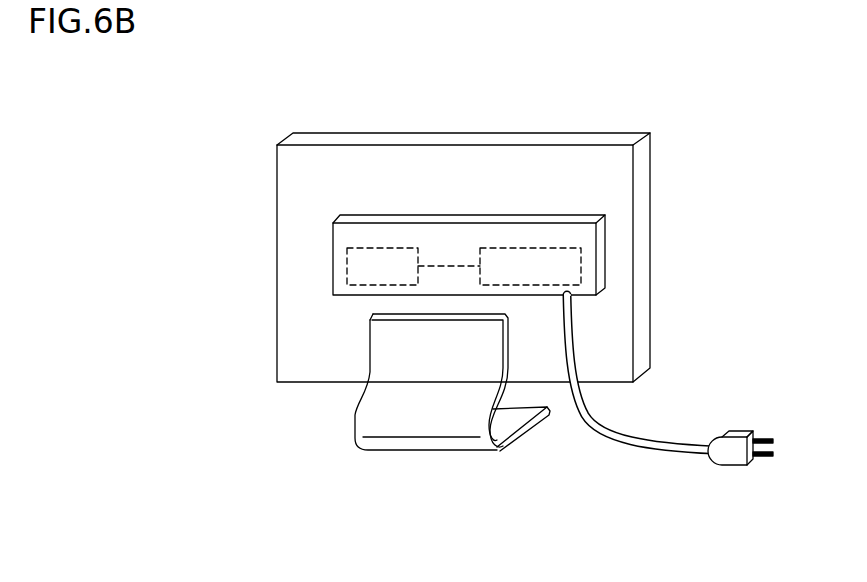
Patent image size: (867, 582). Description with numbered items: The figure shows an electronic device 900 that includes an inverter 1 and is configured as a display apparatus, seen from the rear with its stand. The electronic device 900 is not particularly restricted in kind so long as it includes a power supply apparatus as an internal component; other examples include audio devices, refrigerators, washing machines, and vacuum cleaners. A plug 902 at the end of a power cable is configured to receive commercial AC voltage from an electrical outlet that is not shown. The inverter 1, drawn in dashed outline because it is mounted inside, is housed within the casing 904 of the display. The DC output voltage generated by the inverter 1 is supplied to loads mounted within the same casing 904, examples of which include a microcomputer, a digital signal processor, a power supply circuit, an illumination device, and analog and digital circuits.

The casing 904 is at (521, 165).
The electronic device 900 is at (676, 153).
The inverter 1 is at (566, 268).
The plug 902 is at (727, 460).